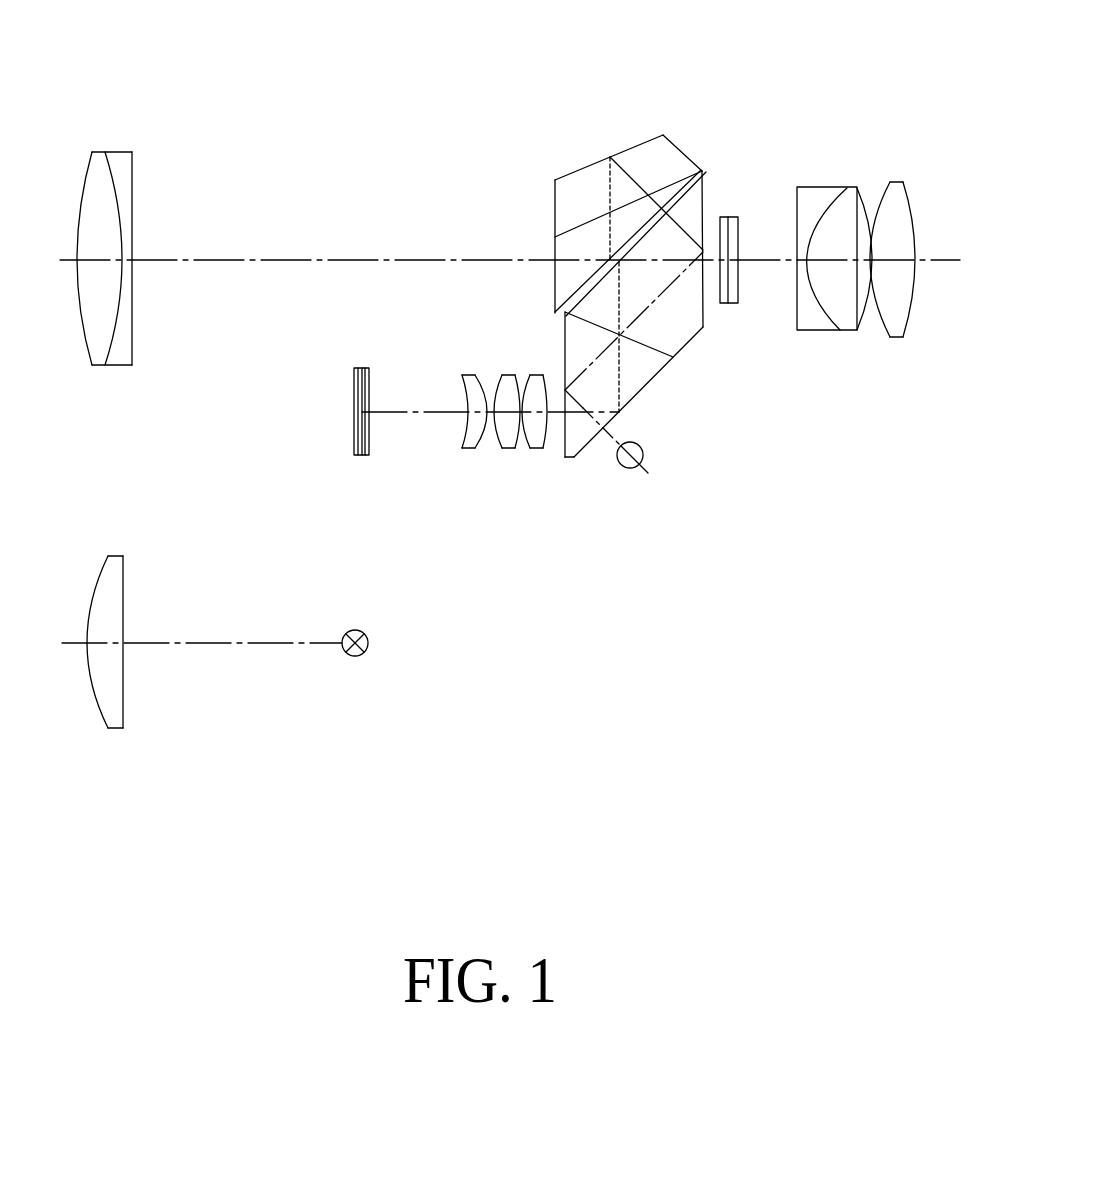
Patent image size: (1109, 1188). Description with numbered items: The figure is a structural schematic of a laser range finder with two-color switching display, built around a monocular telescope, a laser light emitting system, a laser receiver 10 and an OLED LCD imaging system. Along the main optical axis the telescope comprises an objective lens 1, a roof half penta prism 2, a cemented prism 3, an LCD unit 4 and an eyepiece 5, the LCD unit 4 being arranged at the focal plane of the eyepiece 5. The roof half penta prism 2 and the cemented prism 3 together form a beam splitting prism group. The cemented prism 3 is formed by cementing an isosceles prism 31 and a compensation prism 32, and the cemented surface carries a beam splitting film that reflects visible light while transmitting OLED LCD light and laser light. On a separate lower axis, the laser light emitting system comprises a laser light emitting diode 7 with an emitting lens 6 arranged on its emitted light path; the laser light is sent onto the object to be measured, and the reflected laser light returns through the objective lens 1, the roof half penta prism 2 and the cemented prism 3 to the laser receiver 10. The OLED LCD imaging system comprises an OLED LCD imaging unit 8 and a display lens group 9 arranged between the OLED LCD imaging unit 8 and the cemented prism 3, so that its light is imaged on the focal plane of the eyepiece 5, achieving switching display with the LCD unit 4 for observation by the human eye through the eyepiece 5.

The objective lens 1 is at (101, 195).
The roof half penta prism 2 is at (689, 291).
The cemented prism 3 is at (708, 147).
The LCD unit 4 is at (730, 215).
The eyepiece 5 is at (897, 213).
The emitting lens 6 is at (112, 600).
The laser light emitting diode 7 is at (363, 653).
The OLED LCD imaging unit 8 is at (362, 455).
The display lens group 9 is at (537, 427).
The laser receiver 10 is at (637, 463).
The isosceles prism 31 is at (675, 312).
The compensation prism 32 is at (633, 368).